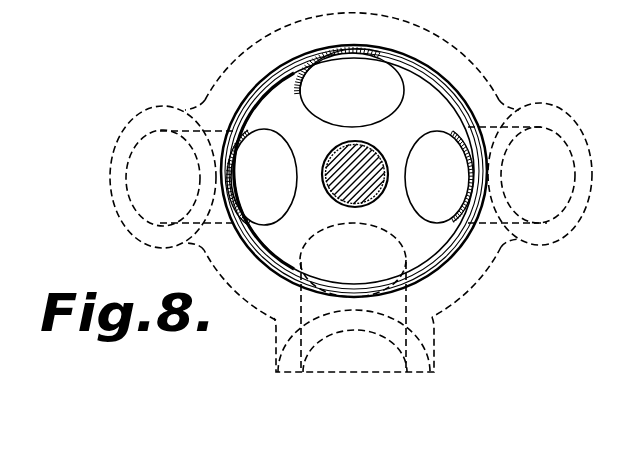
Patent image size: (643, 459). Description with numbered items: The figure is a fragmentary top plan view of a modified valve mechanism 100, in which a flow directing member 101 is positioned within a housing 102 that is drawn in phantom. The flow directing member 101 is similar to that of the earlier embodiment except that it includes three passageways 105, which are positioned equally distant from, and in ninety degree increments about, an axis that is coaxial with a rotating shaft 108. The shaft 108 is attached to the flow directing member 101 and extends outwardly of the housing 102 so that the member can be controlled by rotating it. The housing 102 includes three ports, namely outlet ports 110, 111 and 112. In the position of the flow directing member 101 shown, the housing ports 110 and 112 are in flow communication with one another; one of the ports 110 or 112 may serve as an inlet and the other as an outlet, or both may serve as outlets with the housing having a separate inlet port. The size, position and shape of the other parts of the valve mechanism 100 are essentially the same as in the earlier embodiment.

The valve mechanism 100 is at (497, 68).
The flow directing member 101 is at (378, 53).
The housing 102 is at (497, 250).
The passageways 105 is at (347, 128).
The rotating shaft 108 is at (374, 141).
The outlet port 110 is at (568, 113).
The outlet port 111 is at (414, 328).
The outlet port 112 is at (117, 225).